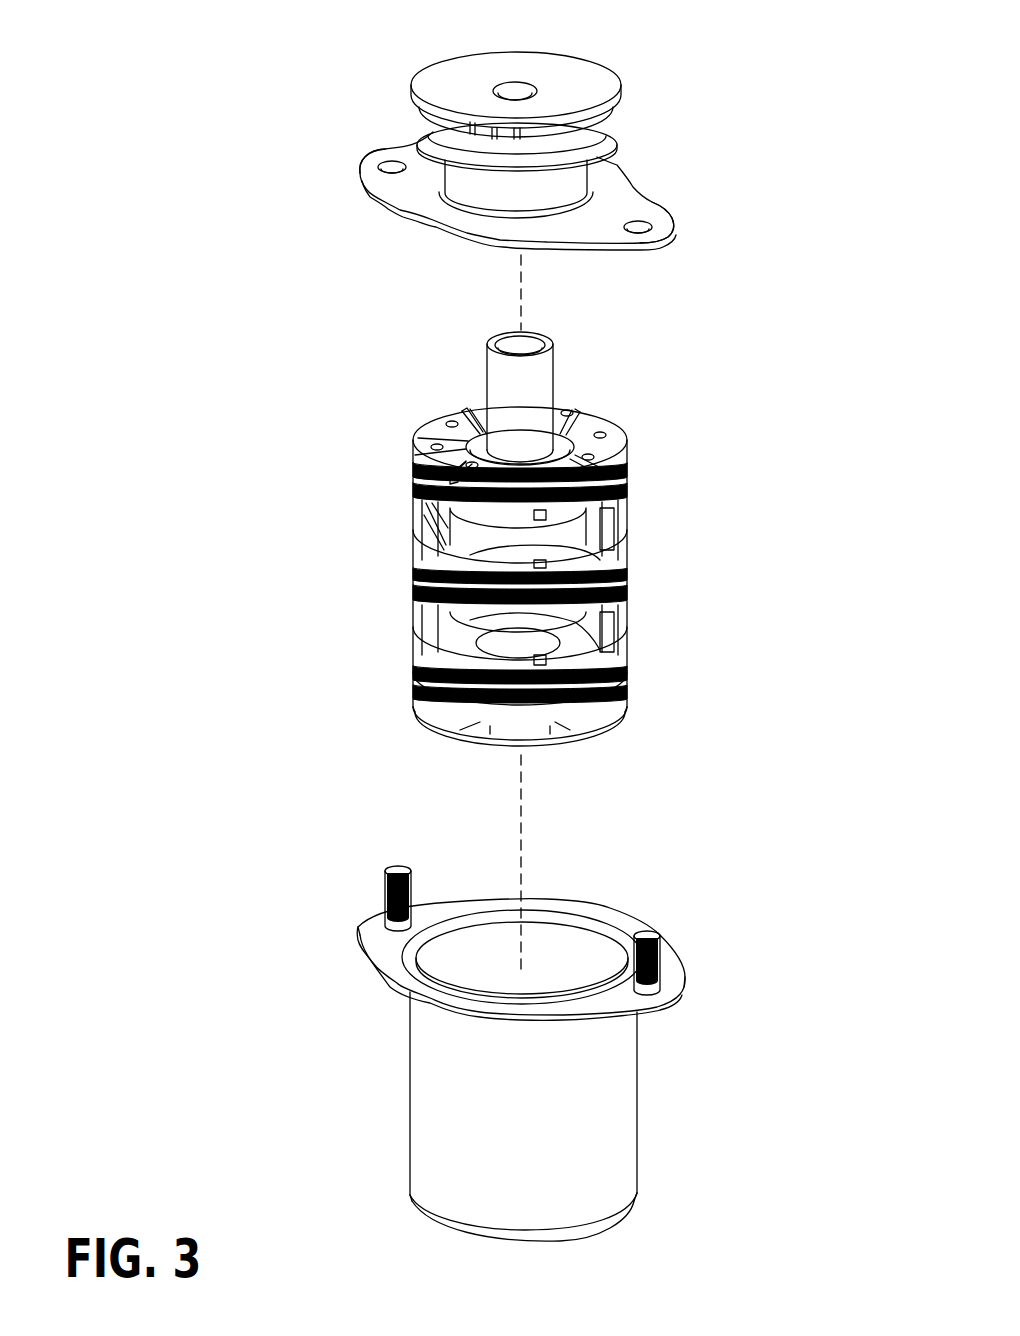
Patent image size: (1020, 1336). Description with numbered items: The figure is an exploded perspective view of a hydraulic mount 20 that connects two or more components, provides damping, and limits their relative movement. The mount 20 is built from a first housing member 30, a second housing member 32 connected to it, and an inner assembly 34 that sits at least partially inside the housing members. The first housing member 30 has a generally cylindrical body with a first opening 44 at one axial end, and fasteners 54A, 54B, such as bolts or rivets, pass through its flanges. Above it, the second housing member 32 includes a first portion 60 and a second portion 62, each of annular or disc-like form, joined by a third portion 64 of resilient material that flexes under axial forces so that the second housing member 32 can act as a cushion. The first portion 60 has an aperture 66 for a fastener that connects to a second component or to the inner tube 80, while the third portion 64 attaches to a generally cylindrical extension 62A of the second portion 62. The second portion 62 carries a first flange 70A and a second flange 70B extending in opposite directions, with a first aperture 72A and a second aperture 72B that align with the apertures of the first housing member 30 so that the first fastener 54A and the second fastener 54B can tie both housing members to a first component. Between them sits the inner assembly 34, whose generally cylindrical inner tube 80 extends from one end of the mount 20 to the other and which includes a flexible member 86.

The mount 20 is at (262, 68).
The first housing member 30 is at (392, 1120).
The second housing member 32 is at (345, 192).
The inner assembly 34 is at (347, 567).
The first opening 44 is at (602, 912).
The first fastener 54A is at (388, 893).
The second fastener 54B is at (657, 944).
The first portion 60 is at (606, 100).
The second portion 62 is at (615, 203).
The extension 62A is at (567, 180).
The third portion 64 is at (628, 123).
The aperture 66 is at (521, 92).
The first flange 70A is at (367, 160).
The second flange 70B is at (643, 243).
The first aperture 72A is at (392, 163).
The second aperture 72B is at (650, 222).
The inner tube 80 is at (543, 373).
The flexible member 86 is at (620, 430).